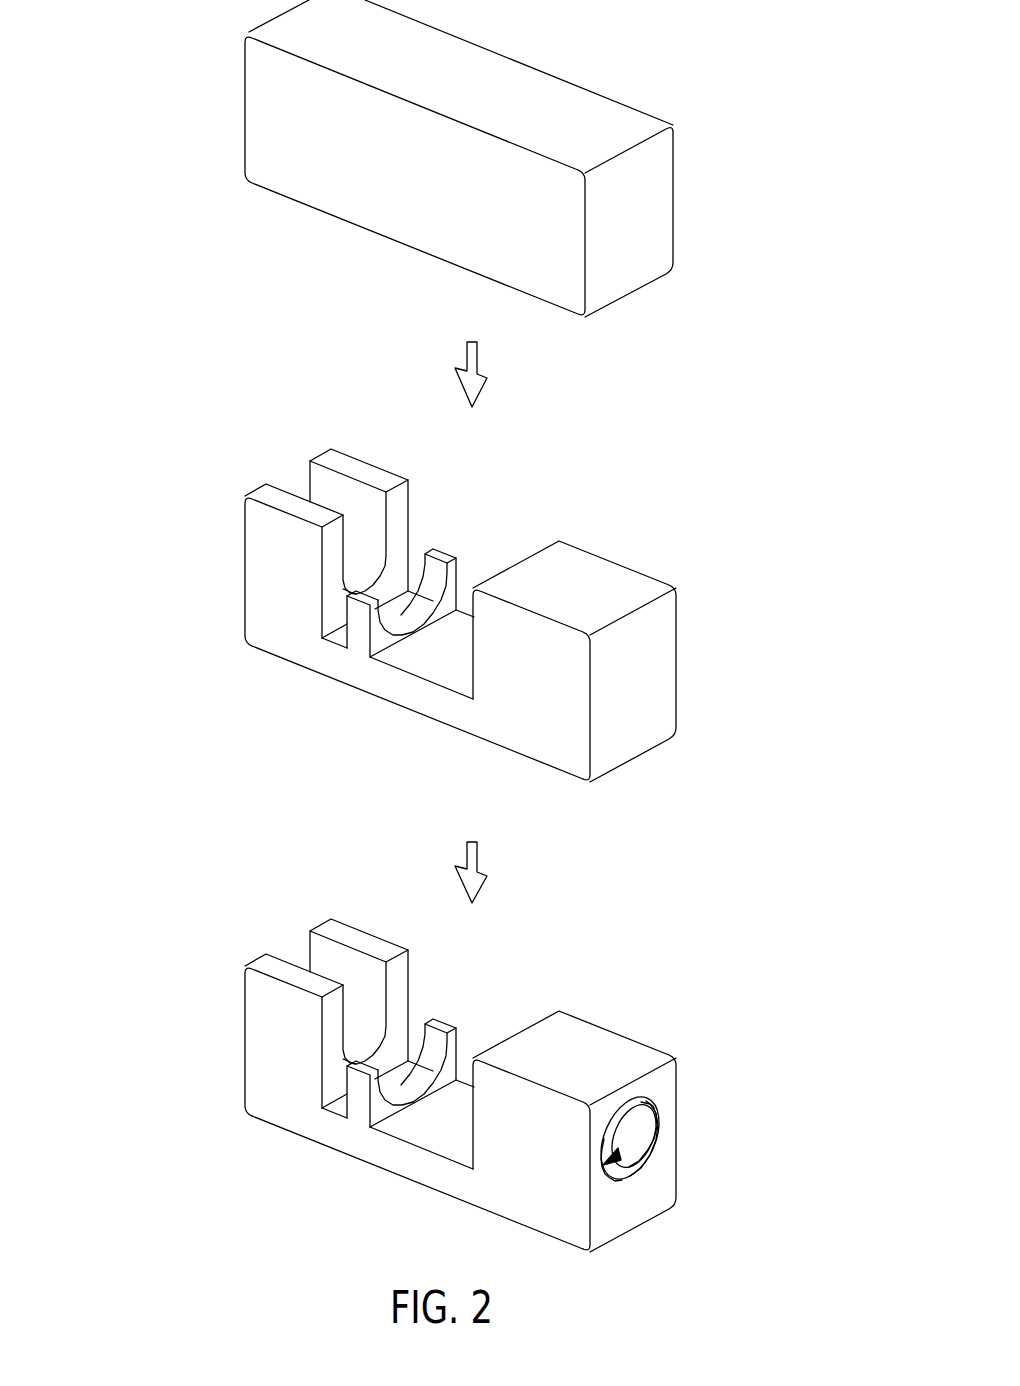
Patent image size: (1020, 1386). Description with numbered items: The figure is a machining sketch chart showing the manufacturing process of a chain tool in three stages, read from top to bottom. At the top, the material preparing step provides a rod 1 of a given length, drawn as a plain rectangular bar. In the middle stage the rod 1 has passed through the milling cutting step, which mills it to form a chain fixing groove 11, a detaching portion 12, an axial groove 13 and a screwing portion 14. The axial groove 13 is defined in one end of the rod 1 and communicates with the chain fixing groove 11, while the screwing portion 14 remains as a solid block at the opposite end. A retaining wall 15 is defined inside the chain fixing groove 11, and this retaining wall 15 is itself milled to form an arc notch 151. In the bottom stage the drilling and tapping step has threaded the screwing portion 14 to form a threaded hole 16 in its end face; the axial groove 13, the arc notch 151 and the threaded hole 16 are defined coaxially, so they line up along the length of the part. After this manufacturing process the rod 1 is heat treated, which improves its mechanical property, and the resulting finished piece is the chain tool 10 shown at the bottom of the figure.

The rod 1 is at (693, 95).
The chain tool 10 is at (207, 1123).
The chain fixing groove 11 is at (430, 530).
The detaching portion 12 is at (244, 558).
The axial groove 13 is at (320, 477).
The screwing portion 14 is at (663, 668).
The retaining wall 15 is at (377, 638).
The arc notch 151 is at (416, 616).
The threaded hole 16 is at (640, 1143).